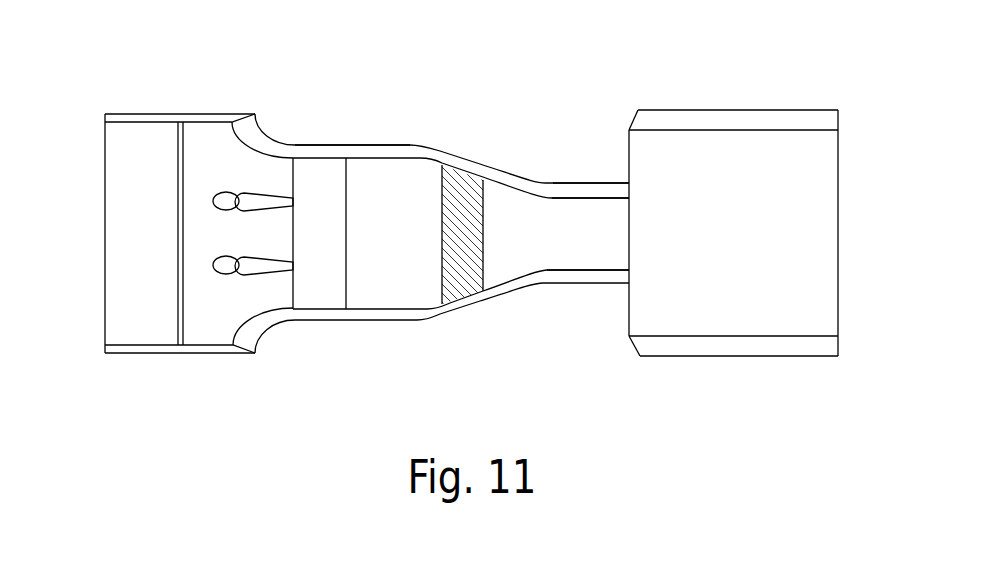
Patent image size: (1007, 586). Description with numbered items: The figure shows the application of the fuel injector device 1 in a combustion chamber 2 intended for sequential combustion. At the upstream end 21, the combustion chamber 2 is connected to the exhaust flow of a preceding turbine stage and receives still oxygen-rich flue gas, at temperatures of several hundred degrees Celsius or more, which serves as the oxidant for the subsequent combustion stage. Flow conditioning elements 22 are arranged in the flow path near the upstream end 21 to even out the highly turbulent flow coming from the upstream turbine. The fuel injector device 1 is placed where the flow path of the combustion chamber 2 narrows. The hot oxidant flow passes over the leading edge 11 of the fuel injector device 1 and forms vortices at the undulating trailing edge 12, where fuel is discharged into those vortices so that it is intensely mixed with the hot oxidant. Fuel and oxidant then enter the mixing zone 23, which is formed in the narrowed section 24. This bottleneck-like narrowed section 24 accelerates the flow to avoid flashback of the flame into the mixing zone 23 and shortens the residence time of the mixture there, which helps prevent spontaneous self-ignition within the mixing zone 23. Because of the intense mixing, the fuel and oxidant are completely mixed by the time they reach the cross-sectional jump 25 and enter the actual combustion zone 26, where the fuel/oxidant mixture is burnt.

The fuel injector device 1 is at (462, 163).
The combustion chamber 2 is at (387, 98).
The leading edge 11 is at (438, 278).
The undulating trailing edge 12 is at (487, 278).
The upstream end 21 is at (113, 140).
The flow conditioning elements 22 is at (193, 350).
The mixing zone 23 is at (584, 234).
The narrowed section 24 is at (553, 177).
The cross-sectional jump 25 is at (733, 233).
The combustion zone 26 is at (740, 110).